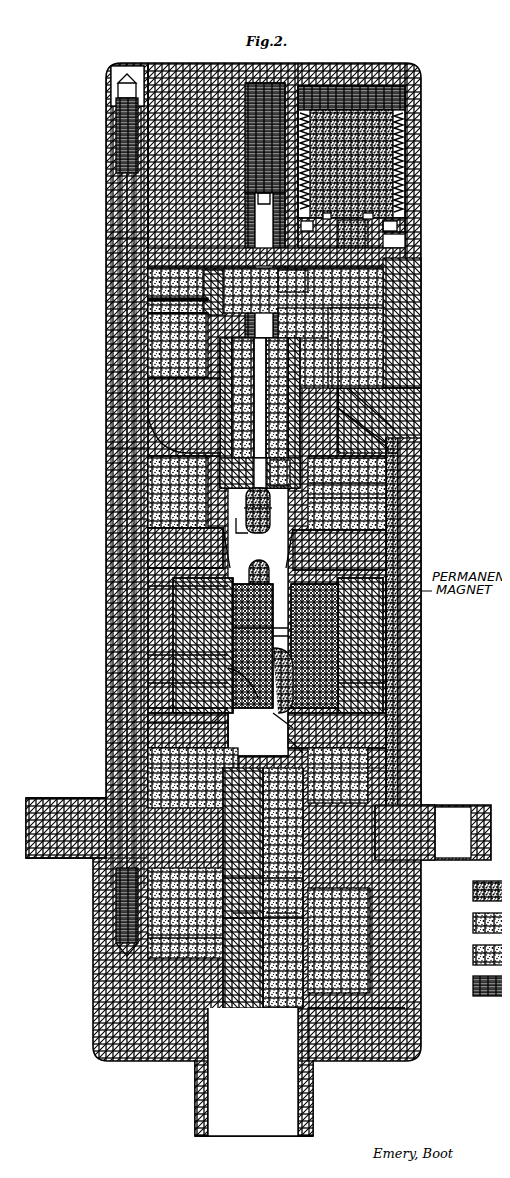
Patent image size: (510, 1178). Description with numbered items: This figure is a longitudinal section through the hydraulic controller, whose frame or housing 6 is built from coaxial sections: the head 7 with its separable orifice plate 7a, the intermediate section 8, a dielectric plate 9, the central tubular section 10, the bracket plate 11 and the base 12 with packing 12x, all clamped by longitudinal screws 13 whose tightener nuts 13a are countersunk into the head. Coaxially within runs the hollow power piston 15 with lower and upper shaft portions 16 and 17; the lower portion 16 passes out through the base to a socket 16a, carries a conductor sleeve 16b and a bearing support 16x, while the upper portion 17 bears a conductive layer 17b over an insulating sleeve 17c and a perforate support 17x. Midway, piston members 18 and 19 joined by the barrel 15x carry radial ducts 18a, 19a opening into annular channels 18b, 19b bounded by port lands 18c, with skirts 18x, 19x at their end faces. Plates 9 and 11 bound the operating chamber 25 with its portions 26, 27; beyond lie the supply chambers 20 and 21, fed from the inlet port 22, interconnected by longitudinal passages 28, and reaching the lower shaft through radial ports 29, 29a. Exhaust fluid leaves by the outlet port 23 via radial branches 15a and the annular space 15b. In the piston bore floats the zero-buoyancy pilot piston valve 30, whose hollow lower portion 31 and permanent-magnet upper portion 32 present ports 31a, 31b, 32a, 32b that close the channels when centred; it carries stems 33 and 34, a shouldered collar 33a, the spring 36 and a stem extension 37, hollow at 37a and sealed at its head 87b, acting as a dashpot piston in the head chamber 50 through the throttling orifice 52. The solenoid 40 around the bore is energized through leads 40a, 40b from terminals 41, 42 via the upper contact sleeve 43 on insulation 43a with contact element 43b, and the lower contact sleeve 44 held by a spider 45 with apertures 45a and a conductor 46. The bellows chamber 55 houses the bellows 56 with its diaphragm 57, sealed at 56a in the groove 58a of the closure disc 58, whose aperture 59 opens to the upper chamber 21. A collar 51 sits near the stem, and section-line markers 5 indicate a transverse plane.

The section line 5- 5 is at (98, 530).
The frame or housing 6 is at (80, 274).
The head 7 is at (100, 200).
The plate 7a is at (140, 247).
The intermediate section 8 is at (140, 308).
The plate 9 is at (132, 420).
The central tubular section 10 is at (140, 460).
The support or bracket plate 11 is at (92, 802).
The base 12 is at (102, 991).
The packing means 12x is at (355, 1056).
The longitudinal screws 13 is at (140, 713).
The tightener nuts 13a is at (118, 82).
The output element or power piston 15 is at (184, 1091).
The radial branches 15a is at (140, 578).
The annular space 15b is at (140, 620).
The barrel 15x is at (140, 647).
The lower shaft portion 16 is at (306, 1078).
The socket 16a is at (252, 1118).
The conductor sleeve 16b is at (320, 1110).
The bearing support 16x is at (286, 737).
The upper shaft portion 17 is at (255, 363).
The conductive sleeve 17b is at (347, 494).
The insulating sleeve 17c is at (347, 485).
The perforate support 17x is at (283, 473).
The lower piston member 18 is at (413, 700).
The radial passages 18a is at (338, 771).
The annular channel 18b is at (235, 722).
The port lands 18c is at (273, 680).
The skirt formation 18x is at (140, 698).
The upper piston member 19 is at (430, 523).
The radial passages 19a is at (347, 503).
The annular channel 19b is at (242, 530).
The skirt formation 19x is at (136, 523).
The lower end chamber 20 is at (368, 952).
The upper end chamber 21 is at (140, 328).
The inlet port 22 is at (410, 282).
The outlet port 23 is at (413, 622).
The operating chamber 25 is at (134, 440).
The chamber portion 26 is at (140, 752).
The chamber portion 27 is at (140, 486).
The longitudinal passages 28 is at (395, 673).
The radial ports 29 is at (263, 898).
The valve seat portion 29a is at (282, 911).
The pilot-piston valve 30 is at (258, 643).
The lower portion 31 is at (258, 746).
The ports 31a is at (274, 718).
The ports 31b is at (247, 683).
The upper portion 32 is at (290, 597).
The ports 32a is at (266, 518).
The ports 32b is at (252, 532).
The lower stem 33 is at (263, 887).
The shouldered collar 33a is at (248, 911).
The upper stem 34 is at (260, 413).
The compression spring 36 is at (260, 473).
The stem extension 37 is at (328, 328).
The hollow portion 37a is at (265, 290).
The solenoid 40 is at (140, 600).
The lead 40a is at (136, 546).
The lead 40b is at (191, 770).
The conductor terminal 41 is at (140, 293).
The conductor terminal 42 is at (355, 348).
The upper contact sleeve 43 is at (178, 345).
The insulating means 43a is at (188, 292).
The contact element 43b is at (190, 398).
The lower contact sleeve 44 is at (185, 933).
The spider 45 is at (145, 882).
The apertures 45a is at (183, 913).
The conductor 46 is at (430, 931).
The dashpot chamber 50 is at (243, 78).
The stem collar 51 is at (294, 283).
The orifice 52 is at (186, 215).
The bellows chamber 55 is at (355, 90).
The bellows 56 is at (392, 145).
The seal 56a is at (337, 207).
The diaphragm 57 is at (342, 104).
The closure disc 58 is at (398, 218).
The annular groove 58a is at (398, 237).
The aperture 59 is at (363, 207).
The adjusting stem 87b is at (254, 176).